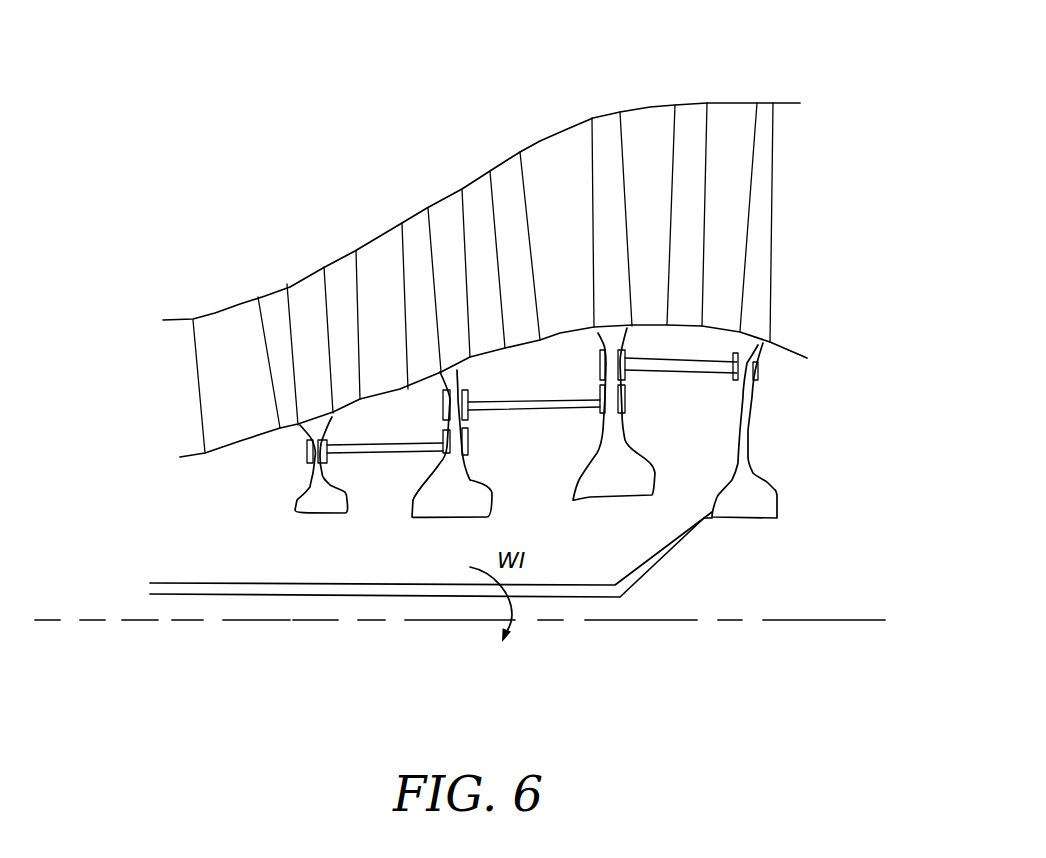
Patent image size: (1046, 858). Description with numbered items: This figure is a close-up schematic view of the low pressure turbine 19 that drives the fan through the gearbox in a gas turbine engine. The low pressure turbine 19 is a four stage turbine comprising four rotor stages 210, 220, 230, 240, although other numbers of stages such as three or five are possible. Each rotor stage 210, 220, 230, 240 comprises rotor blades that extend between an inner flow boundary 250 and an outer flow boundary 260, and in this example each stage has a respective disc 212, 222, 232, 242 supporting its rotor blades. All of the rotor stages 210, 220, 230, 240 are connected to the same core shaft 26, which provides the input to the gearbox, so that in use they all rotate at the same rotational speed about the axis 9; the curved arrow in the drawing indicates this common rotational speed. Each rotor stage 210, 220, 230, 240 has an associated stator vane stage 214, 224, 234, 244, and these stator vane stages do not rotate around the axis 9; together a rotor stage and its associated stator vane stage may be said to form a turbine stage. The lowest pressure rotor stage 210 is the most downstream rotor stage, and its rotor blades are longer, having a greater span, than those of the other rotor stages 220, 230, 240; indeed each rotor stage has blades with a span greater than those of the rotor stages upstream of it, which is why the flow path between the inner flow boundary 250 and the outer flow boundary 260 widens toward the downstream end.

The low pressure turbine 19 is at (190, 169).
The core shaft 26 is at (175, 588).
The axis 9 is at (858, 621).
The lowest pressure rotor stage 210 is at (762, 225).
The disc 212 is at (772, 508).
The stator vane stage 214 is at (687, 112).
The rotor stage 220 is at (610, 123).
The disc 222 is at (627, 458).
The stator vane stage 224 is at (503, 165).
The rotor stage 230 is at (443, 203).
The disc 232 is at (477, 495).
The stator vane stage 234 is at (378, 243).
The rotor stage 240 is at (310, 280).
The disc 242 is at (312, 498).
The stator vane stage 244 is at (230, 317).
The inner flow boundary 250 is at (793, 357).
The outer flow boundary 260 is at (735, 102).